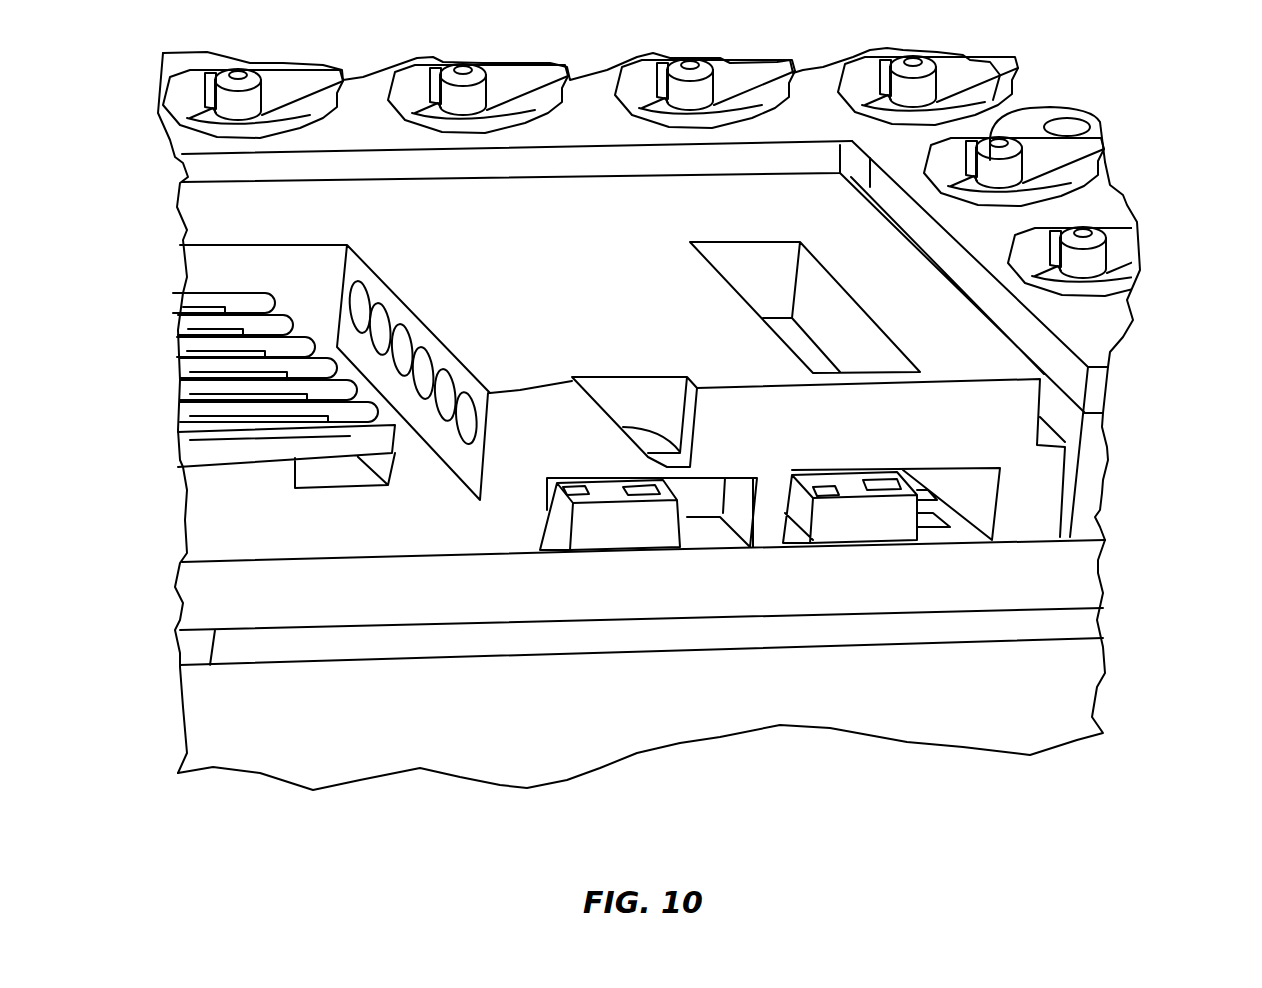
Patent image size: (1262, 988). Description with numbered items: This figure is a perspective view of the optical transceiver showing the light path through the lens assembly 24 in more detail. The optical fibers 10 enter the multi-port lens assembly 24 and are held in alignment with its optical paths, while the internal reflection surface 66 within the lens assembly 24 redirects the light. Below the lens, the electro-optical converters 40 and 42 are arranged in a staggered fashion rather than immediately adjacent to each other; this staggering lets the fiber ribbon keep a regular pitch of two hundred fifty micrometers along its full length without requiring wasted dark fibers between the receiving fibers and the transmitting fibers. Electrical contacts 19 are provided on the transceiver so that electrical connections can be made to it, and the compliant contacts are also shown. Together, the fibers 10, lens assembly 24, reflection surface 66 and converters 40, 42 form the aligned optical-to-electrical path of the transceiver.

The optical fibers 10 is at (207, 443).
The electrical contacts 19 is at (1100, 142).
The multi-port lens assembly 24 is at (990, 413).
The electro-optical converter 40 is at (590, 540).
The electro-optical converter 42 is at (875, 527).
The internal reflection surface 66 is at (683, 450).